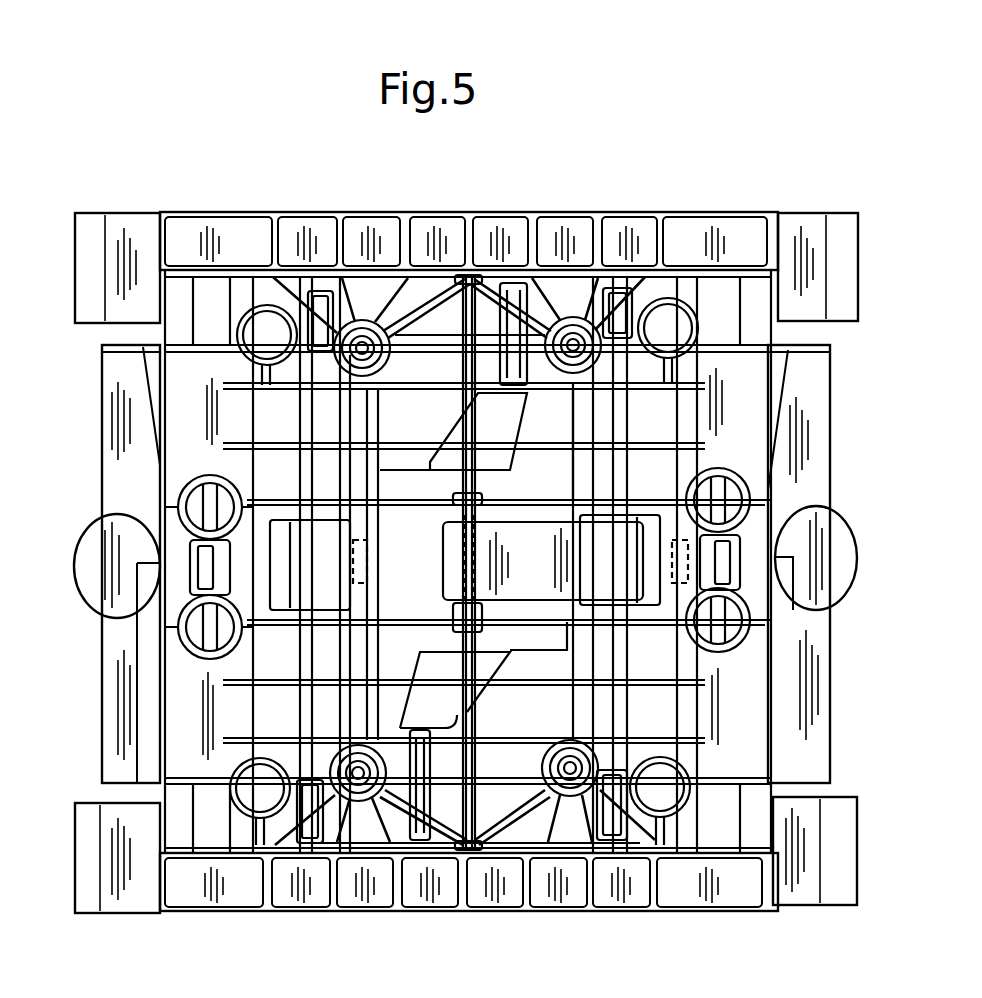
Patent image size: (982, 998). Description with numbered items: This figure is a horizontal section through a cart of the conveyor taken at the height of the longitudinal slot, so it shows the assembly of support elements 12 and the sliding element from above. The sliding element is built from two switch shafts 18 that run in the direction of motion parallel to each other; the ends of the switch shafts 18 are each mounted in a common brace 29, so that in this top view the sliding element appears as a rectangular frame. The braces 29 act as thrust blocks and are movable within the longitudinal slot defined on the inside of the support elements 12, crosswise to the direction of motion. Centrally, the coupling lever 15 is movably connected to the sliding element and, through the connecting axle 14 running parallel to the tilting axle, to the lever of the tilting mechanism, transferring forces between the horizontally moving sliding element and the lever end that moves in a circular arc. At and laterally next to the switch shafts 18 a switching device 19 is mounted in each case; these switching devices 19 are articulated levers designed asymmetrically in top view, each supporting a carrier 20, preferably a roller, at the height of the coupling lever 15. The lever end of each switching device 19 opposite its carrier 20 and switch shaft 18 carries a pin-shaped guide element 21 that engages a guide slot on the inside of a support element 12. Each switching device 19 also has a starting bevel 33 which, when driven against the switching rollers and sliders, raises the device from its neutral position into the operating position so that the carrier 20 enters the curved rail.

The support element 12 is at (683, 880).
The connecting axle 14 is at (457, 610).
The coupling lever 15 is at (513, 553).
The switch shaft 18 is at (318, 345).
The switching device 19 is at (810, 737).
The carrier 20 is at (835, 523).
The guide element 21 is at (512, 290).
The brace 29 is at (408, 300).
The starting bevel 33 is at (787, 390).